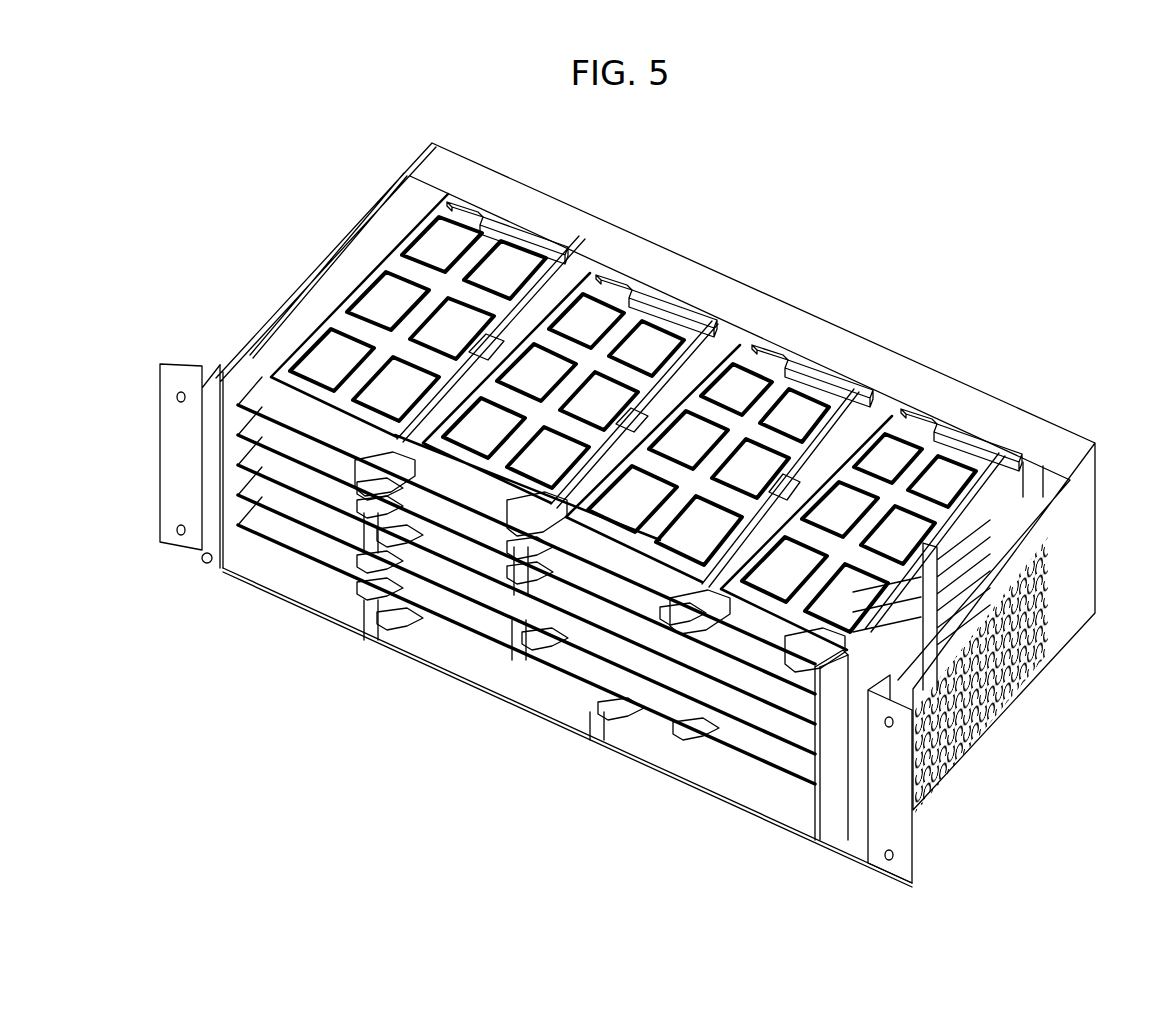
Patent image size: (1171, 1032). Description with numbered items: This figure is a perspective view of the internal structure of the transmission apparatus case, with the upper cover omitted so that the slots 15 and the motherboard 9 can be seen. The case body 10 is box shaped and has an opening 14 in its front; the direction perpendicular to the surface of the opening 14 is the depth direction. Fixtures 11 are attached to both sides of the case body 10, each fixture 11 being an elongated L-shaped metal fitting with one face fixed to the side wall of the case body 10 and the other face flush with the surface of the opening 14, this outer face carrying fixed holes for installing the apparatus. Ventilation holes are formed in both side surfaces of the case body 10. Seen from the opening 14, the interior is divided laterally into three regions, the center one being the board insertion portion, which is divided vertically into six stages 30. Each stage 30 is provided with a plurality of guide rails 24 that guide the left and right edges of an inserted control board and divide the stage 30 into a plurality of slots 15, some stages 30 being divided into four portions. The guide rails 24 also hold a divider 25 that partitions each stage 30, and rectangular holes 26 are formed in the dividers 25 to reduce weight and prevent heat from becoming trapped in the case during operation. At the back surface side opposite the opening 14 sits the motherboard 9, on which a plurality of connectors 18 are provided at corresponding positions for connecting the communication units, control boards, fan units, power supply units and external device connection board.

The motherboard 9 is at (467, 207).
The case body 10 is at (1075, 540).
The fixture 11 is at (175, 472).
The opening 14 is at (660, 750).
The slot 15 is at (423, 497).
The connector 18 is at (528, 235).
The guide rail 24 is at (370, 562).
The divider 25 is at (470, 613).
The rectangular hole 26 is at (787, 565).
The stage 30 is at (800, 735).